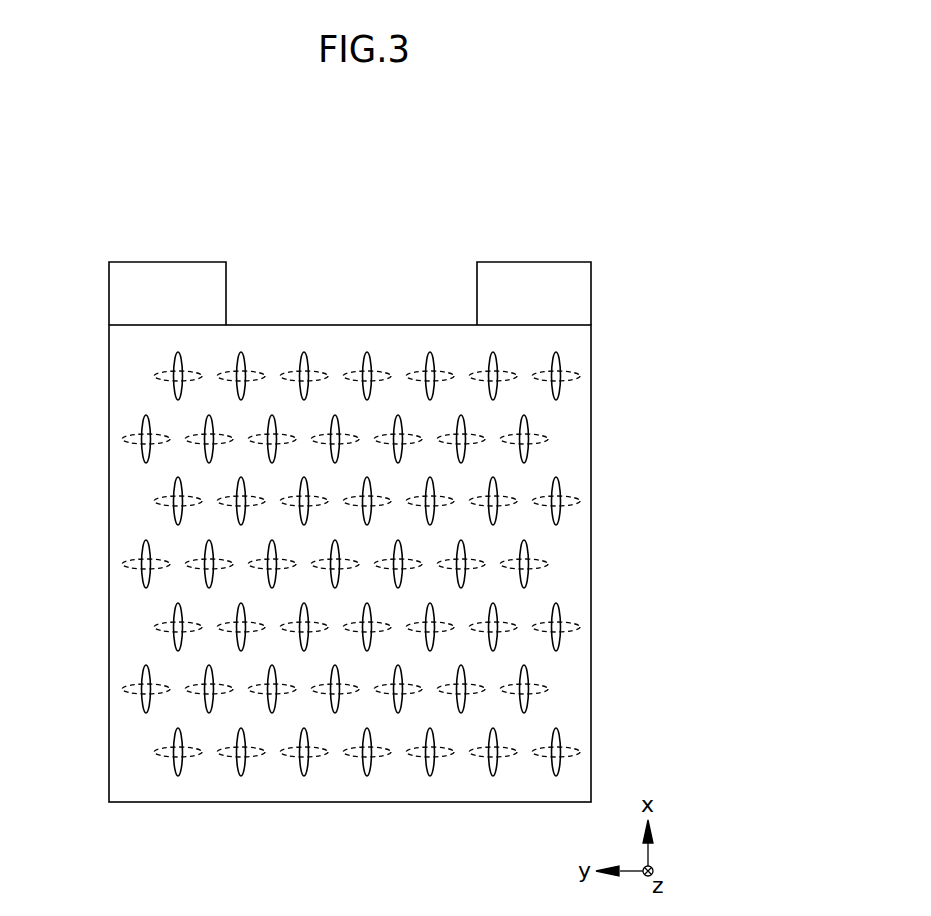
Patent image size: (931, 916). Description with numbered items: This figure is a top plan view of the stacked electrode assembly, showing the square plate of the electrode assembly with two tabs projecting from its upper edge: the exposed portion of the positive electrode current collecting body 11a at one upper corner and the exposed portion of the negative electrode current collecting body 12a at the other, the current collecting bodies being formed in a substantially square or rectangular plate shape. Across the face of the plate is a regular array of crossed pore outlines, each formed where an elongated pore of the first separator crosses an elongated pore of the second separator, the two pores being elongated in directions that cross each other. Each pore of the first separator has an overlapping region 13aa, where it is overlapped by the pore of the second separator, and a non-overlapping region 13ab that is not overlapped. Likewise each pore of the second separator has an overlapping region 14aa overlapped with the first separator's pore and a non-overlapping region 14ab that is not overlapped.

The positive electrode current collecting body 11a is at (180, 290).
The negative electrode current collecting body 12a is at (521, 278).
The non-overlapping region of the first separator pore 13ab is at (559, 362).
The overlapping region of the first separator pore 13aa is at (566, 377).
The non-overlapping region of the second separator pore 14ab is at (128, 437).
The overlapping region of the second separator pore 14aa is at (146, 441).